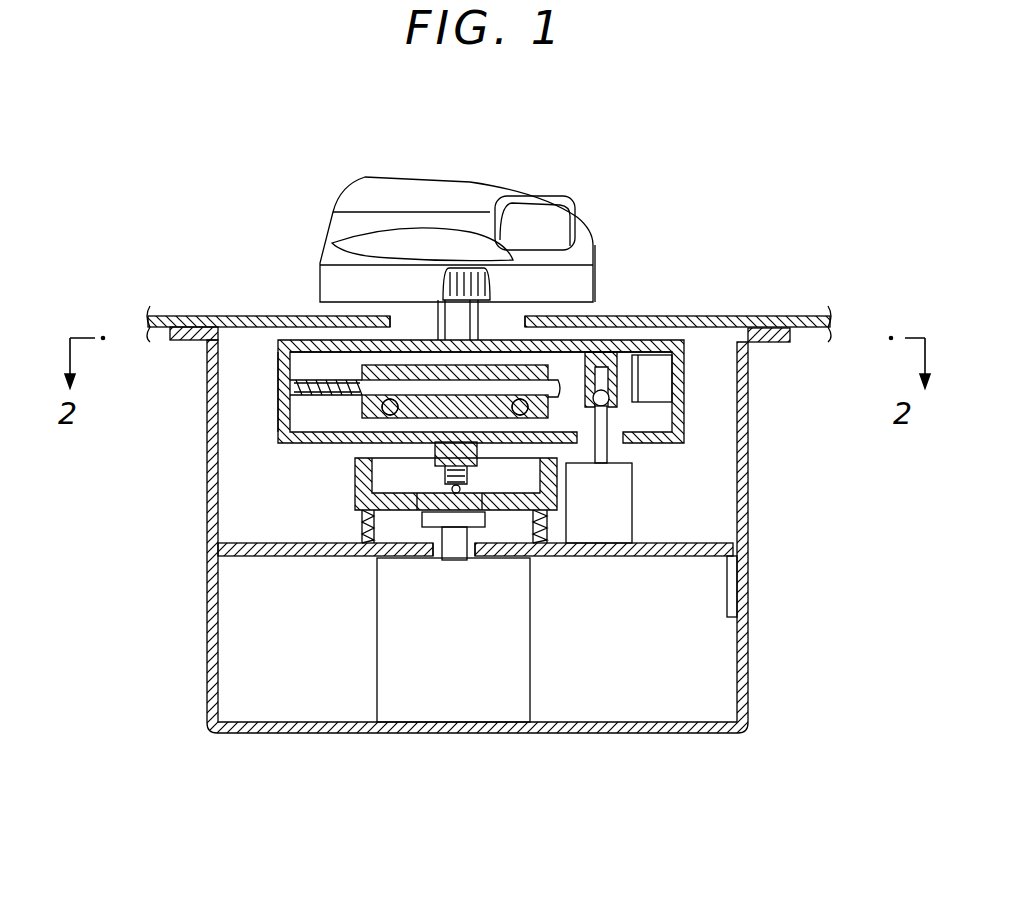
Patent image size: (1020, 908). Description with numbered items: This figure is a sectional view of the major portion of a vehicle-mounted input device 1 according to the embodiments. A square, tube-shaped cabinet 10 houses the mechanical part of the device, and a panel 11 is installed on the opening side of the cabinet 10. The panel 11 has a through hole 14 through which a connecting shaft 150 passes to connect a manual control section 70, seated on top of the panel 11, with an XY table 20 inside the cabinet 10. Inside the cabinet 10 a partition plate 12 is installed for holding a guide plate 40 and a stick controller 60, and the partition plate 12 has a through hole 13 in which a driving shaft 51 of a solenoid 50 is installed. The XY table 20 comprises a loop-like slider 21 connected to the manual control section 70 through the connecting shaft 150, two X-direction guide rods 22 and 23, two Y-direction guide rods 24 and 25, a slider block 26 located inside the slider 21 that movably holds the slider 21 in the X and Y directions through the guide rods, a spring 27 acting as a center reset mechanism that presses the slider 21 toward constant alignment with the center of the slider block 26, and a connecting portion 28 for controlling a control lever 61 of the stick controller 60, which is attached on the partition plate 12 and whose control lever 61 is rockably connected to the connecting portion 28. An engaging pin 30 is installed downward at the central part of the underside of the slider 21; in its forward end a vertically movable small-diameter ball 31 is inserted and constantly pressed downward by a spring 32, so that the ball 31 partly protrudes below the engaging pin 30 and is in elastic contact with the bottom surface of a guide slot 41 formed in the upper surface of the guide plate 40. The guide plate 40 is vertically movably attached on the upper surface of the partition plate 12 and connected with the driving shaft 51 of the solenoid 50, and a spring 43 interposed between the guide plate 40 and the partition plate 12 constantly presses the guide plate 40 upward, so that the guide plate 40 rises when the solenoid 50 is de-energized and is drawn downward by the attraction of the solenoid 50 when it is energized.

The vehicle-mounted input device 1 is at (599, 238).
The cabinet 10 is at (750, 511).
The panel 11 is at (737, 317).
The partition plate 12 is at (673, 557).
The through hole 13 is at (487, 533).
The through hole 14 is at (500, 335).
The XY table 20 is at (686, 405).
The slider 21 is at (332, 445).
The X-direction guide rod 22 is at (360, 382).
The X-direction guide rod 23 is at (530, 388).
The Y-direction guide rod 24 is at (400, 365).
The Y-direction guide rod 25 is at (404, 322).
The slider block 26 is at (332, 338).
The spring 27 is at (284, 386).
The connecting portion 28 is at (612, 370).
The engaging pin 30 is at (478, 537).
The small-diameter ball 31 is at (400, 507).
The spring 32 is at (440, 470).
The guide plate 40 is at (560, 484).
The guide slot 41 is at (517, 480).
The spring 43 is at (354, 522).
The solenoid 50 is at (505, 700).
The driving shaft 51 is at (453, 530).
The stick controller 60 is at (613, 511).
The control lever 61 is at (622, 423).
The manual control section 70 is at (412, 177).
The connecting shaft 150 is at (455, 320).